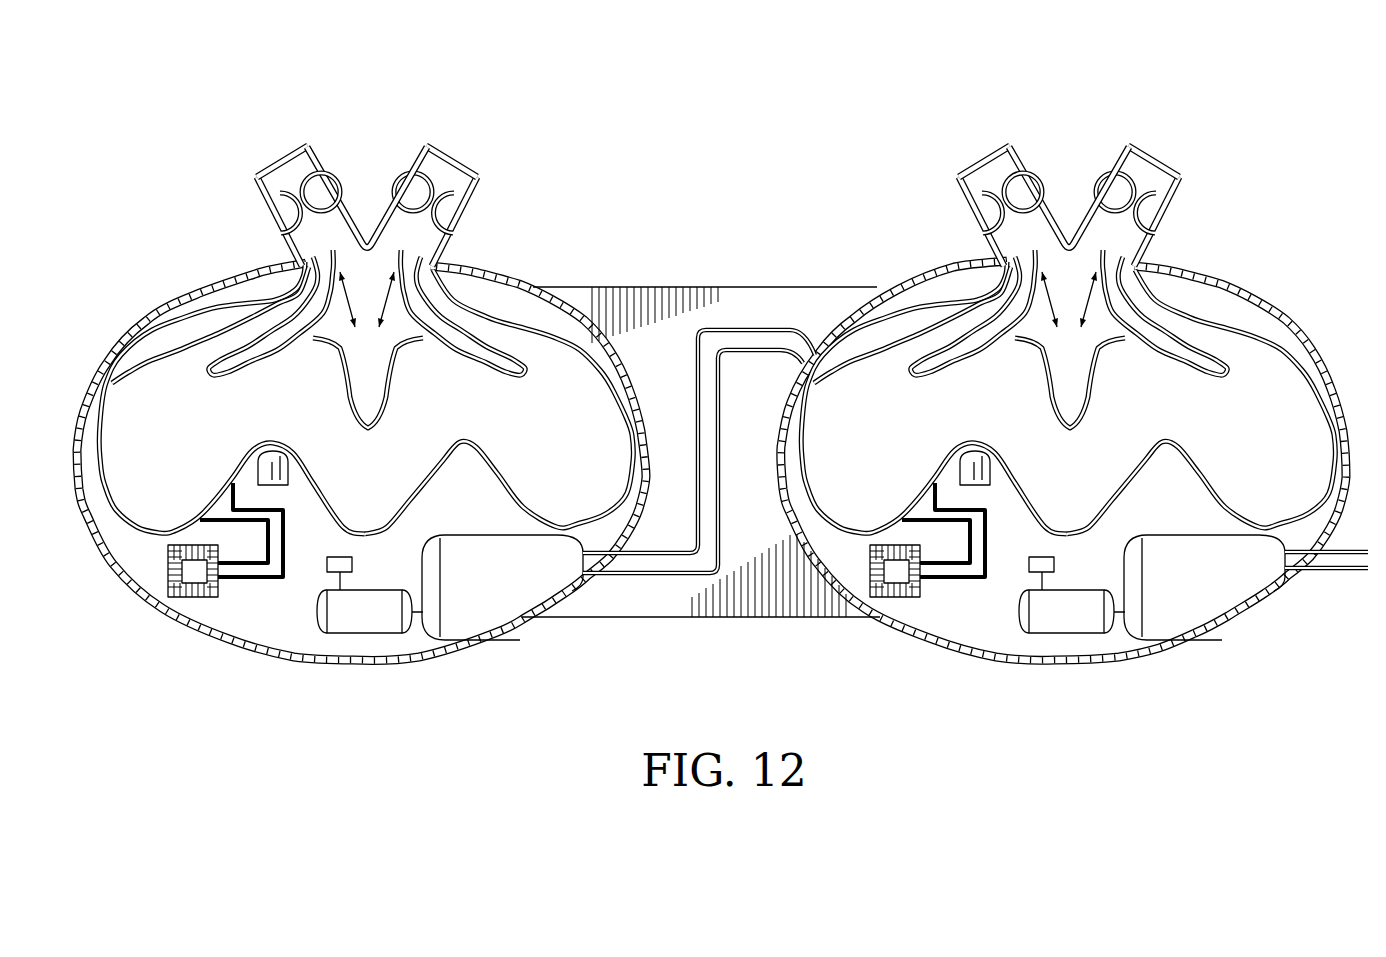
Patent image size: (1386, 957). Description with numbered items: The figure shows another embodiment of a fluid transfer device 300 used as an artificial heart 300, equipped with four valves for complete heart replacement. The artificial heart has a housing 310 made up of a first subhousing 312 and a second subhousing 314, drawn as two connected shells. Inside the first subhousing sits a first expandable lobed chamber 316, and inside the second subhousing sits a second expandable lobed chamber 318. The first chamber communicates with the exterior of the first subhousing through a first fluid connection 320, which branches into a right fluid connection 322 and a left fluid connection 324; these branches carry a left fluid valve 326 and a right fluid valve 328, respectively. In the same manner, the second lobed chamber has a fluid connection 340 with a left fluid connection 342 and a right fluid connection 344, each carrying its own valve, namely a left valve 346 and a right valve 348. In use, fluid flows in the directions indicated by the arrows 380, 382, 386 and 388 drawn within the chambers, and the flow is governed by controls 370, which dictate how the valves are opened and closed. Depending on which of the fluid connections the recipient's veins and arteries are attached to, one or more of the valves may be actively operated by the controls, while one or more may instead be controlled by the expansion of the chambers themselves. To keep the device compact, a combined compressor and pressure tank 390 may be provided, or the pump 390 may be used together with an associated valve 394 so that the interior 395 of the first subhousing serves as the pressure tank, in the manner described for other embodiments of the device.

The fluid transfer device 300 is at (722, 396).
The housing 310 is at (675, 607).
The first subhousing 312 is at (456, 665).
The second subhousing 314 is at (1153, 650).
The first expandable lobed chamber 316 is at (485, 345).
The second expandable lobed chamber 318 is at (1223, 312).
The first fluid connection 320 is at (345, 188).
The right fluid connection 322 is at (330, 180).
The left fluid connection 324 is at (470, 192).
The left fluid valve 326 is at (290, 177).
The right fluid valve 328 is at (447, 180).
The fluid connection 340 is at (1069, 189).
The left fluid connection 342 is at (1007, 139).
The right fluid connection 344 is at (1208, 204).
The left valve 346 is at (948, 165).
The right valve 348 is at (1164, 145).
The controls 370 is at (197, 570).
The arrow 380 is at (1201, 372).
The arrow 382 is at (934, 376).
The arrow 386 is at (446, 300).
The arrow 388 is at (325, 300).
The combined compressor and pressure tank 390 is at (372, 615).
The valve 394 is at (325, 563).
The interior 395 is at (481, 505).